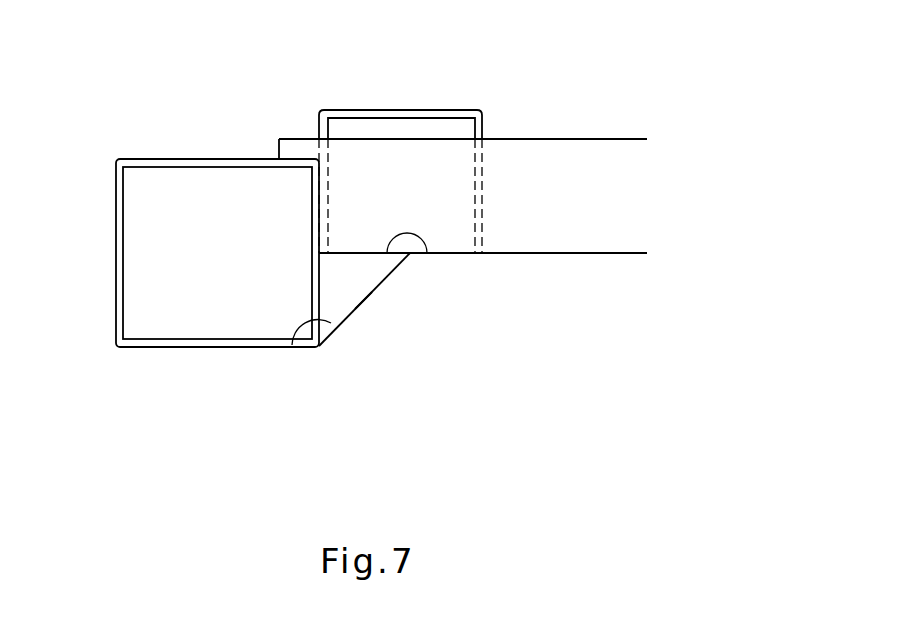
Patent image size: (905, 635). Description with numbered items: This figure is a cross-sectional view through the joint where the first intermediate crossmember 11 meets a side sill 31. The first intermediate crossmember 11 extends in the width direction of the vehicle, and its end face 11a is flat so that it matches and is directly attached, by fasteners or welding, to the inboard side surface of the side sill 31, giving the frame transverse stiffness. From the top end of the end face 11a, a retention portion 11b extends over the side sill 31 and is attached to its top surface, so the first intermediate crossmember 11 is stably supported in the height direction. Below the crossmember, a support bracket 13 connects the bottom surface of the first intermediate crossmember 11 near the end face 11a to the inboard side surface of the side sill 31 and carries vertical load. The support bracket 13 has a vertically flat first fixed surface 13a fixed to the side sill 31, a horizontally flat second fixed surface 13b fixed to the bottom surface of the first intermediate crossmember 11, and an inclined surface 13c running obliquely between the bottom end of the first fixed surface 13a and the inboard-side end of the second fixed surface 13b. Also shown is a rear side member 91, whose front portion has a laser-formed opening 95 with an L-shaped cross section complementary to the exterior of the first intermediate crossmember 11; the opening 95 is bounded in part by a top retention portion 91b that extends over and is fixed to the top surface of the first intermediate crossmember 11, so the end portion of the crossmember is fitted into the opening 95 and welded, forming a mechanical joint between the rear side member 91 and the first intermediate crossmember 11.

The first intermediate crossmember 11 is at (596, 242).
The end face 11a is at (319, 200).
The retention portion 11b is at (300, 138).
The support bracket 13 is at (356, 322).
The first fixed surface 13a is at (292, 345).
The second fixed surface 13b is at (427, 253).
The inclined surface 13c is at (361, 304).
The side sill 31 is at (116, 252).
The rear side member 91 is at (471, 98).
The top retention portion 91b is at (400, 110).
The opening 95 is at (453, 144).